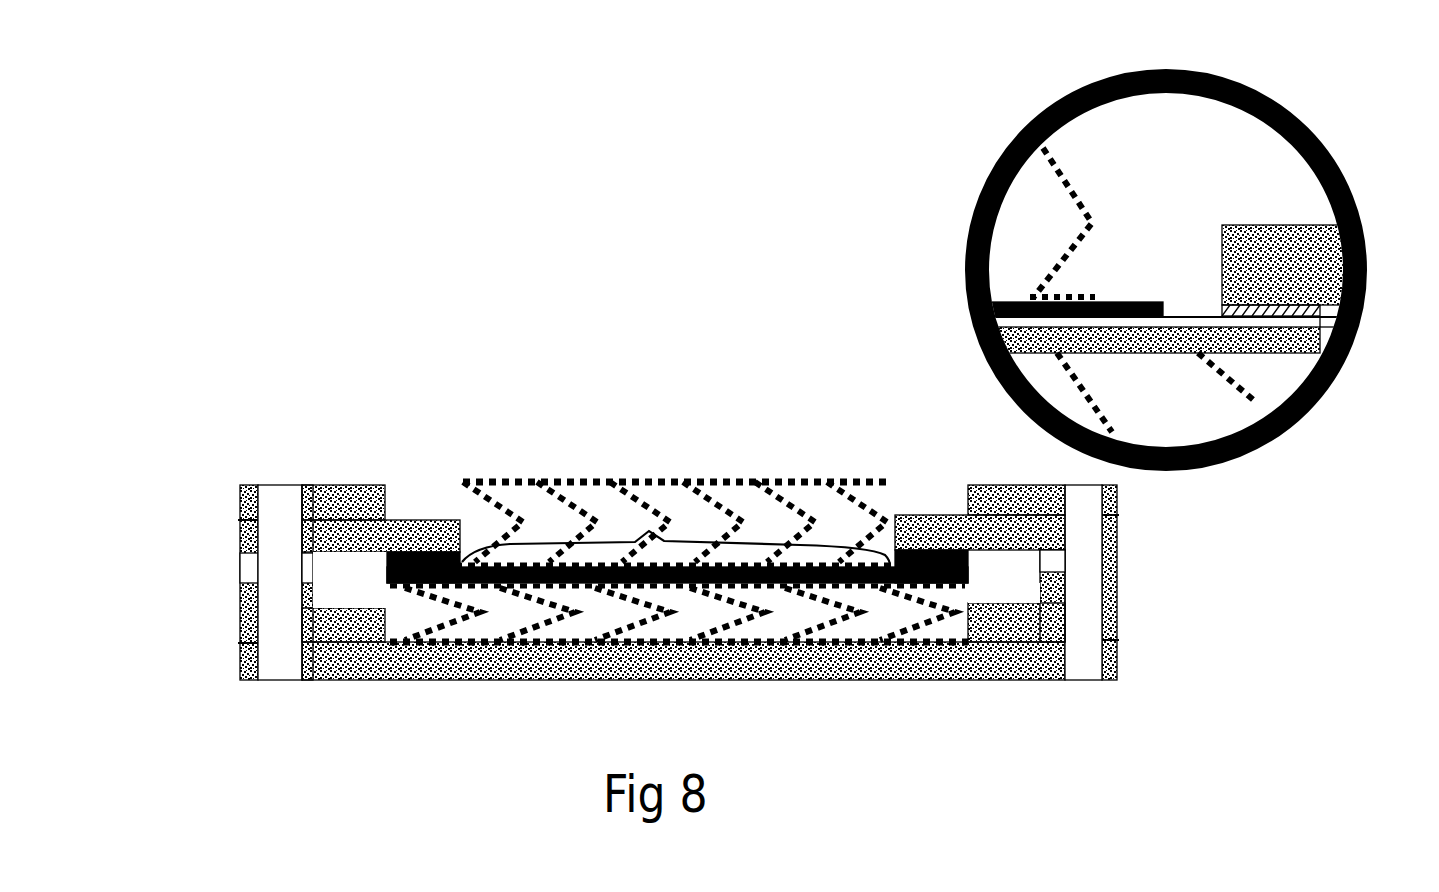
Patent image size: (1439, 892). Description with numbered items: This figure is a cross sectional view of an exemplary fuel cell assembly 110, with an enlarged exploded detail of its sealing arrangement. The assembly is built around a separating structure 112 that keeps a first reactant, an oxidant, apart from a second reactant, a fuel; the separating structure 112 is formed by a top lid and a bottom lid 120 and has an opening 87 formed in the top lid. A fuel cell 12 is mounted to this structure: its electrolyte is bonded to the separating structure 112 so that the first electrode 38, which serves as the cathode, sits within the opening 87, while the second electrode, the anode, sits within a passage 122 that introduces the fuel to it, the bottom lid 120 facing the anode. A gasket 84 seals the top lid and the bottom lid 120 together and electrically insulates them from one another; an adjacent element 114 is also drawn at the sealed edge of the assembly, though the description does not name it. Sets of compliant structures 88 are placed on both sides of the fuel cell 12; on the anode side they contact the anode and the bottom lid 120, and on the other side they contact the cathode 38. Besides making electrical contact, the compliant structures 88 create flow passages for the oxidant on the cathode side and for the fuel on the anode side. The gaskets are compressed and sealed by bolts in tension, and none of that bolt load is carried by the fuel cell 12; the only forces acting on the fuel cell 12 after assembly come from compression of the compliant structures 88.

The fuel cell assembly 110 is at (643, 404).
The fuel cell 12 is at (677, 694).
The gasket 84 is at (245, 568).
The spacer channel 114 is at (262, 740).
The separating structure 112 is at (240, 679).
The bottom lid 120 is at (345, 662).
The passage 122 is at (952, 725).
The first electrode 38 is at (1217, 441).
The opening 87 is at (648, 530).
The compliant structures 88 is at (547, 494).